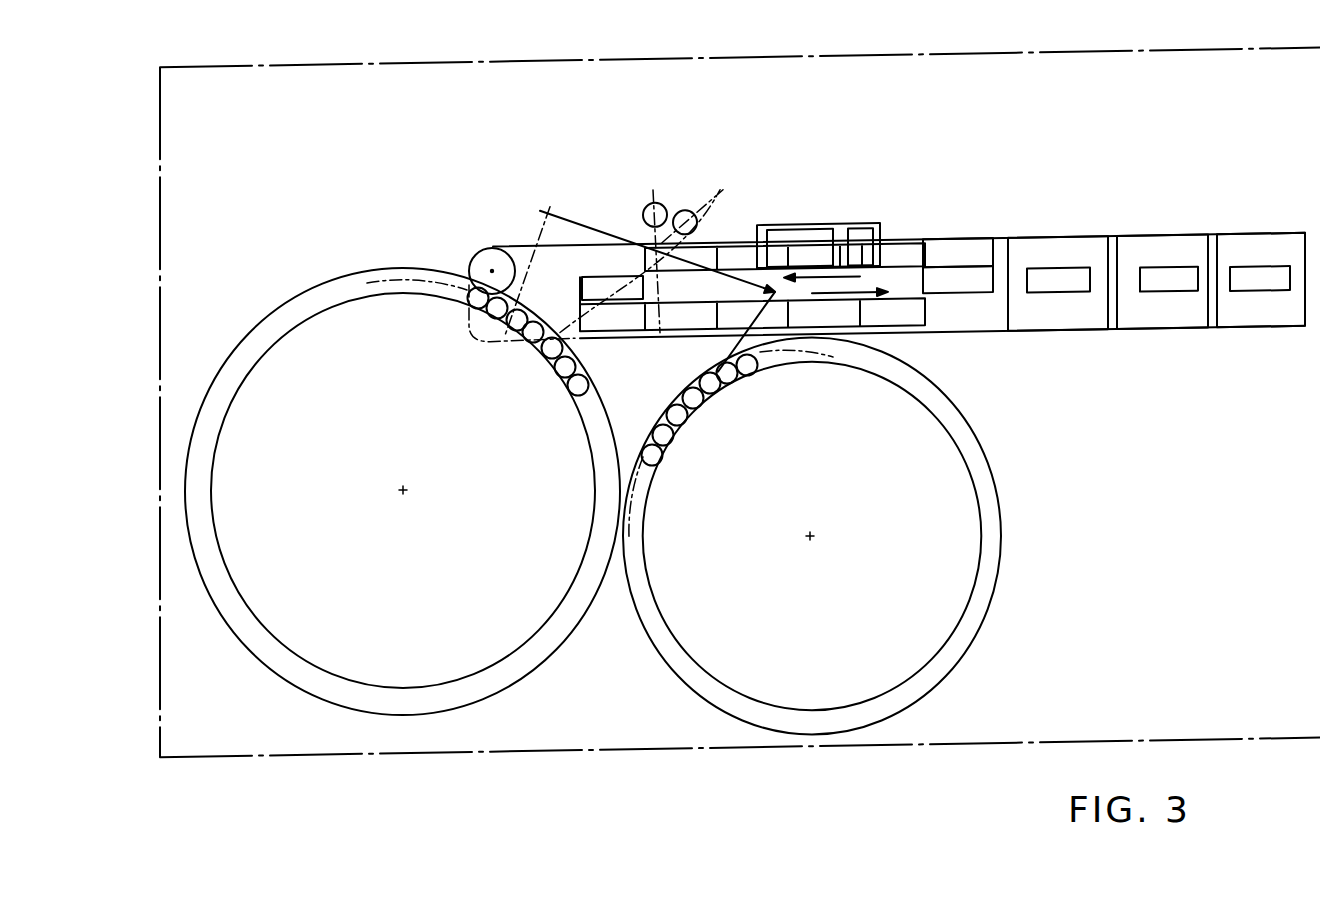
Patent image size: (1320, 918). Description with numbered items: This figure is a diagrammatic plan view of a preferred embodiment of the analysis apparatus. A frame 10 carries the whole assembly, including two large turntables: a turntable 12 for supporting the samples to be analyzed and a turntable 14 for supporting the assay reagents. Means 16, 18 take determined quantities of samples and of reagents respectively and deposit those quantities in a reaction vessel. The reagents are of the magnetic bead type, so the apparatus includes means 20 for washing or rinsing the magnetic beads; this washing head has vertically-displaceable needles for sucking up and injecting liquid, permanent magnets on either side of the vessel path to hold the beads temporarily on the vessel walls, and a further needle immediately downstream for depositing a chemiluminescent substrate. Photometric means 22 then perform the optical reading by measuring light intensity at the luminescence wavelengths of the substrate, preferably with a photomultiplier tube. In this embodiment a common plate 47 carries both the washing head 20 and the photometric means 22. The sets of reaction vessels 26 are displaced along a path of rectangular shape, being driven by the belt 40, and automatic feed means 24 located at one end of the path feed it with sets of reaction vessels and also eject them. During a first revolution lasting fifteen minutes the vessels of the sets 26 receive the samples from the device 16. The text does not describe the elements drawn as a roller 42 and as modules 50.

The frame 10 is at (437, 70).
The turntable 12 is at (1011, 398).
The turntable 14 is at (326, 270).
The means for taking samples 16 is at (742, 351).
The means for taking reagents 18 is at (597, 243).
The means for washing or rinsing magnetic beads 20 is at (811, 205).
The photometric means 22 is at (865, 232).
The automatic feed means 24 is at (1168, 354).
The sets of reaction vessels 26 is at (580, 310).
The belt 40 is at (520, 252).
The guide roller 42 is at (471, 262).
The common plate 47 is at (758, 238).
The modules 50 is at (1060, 255).